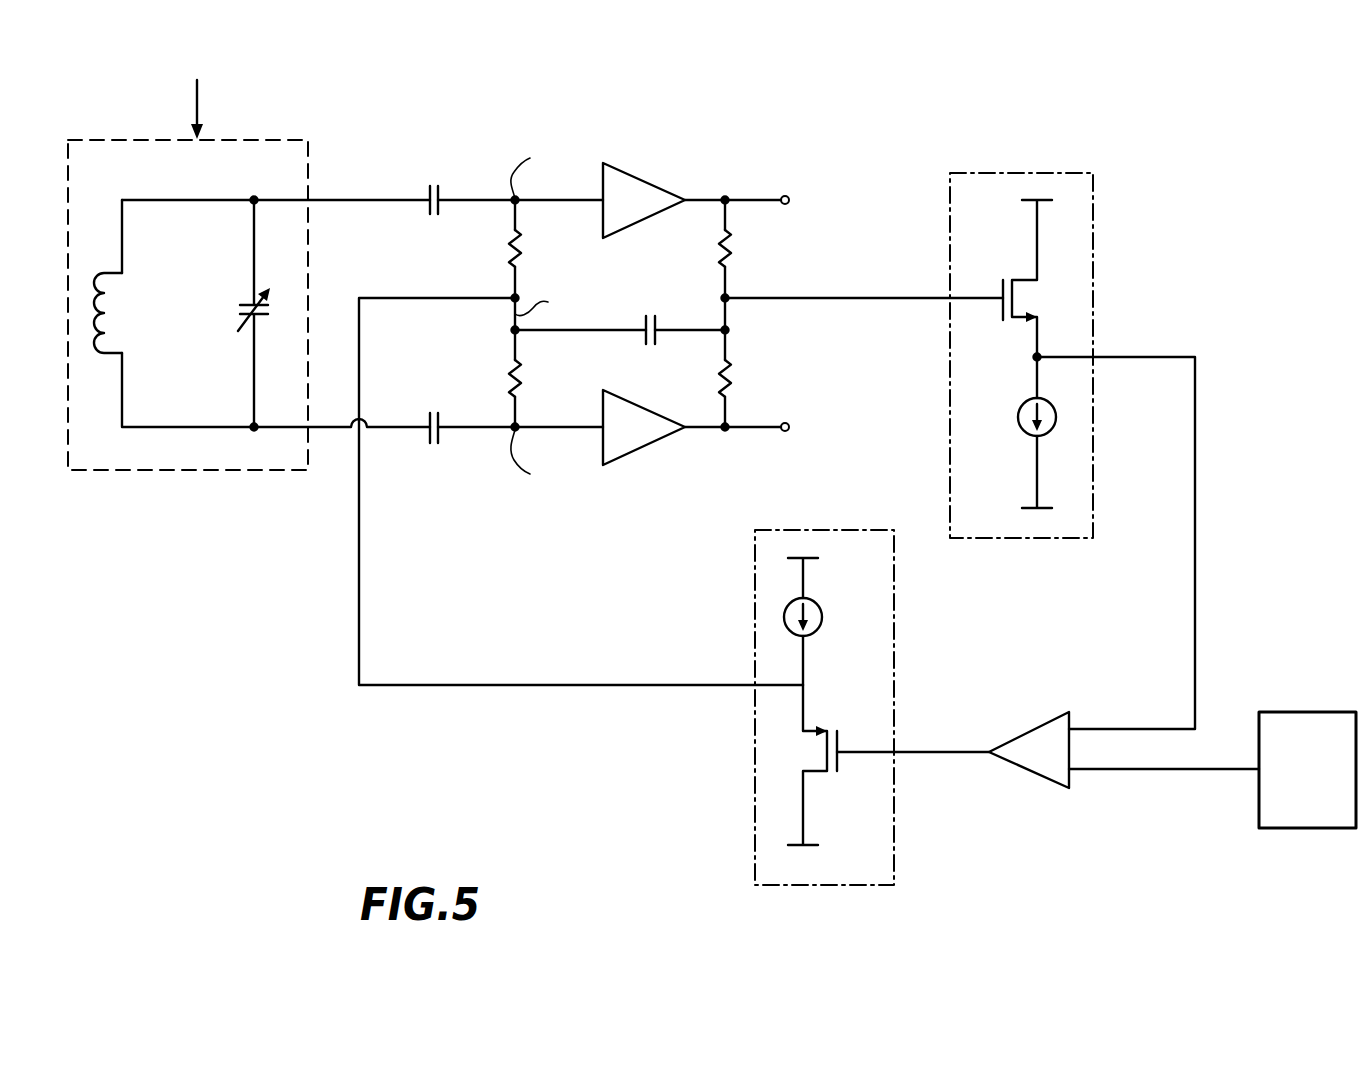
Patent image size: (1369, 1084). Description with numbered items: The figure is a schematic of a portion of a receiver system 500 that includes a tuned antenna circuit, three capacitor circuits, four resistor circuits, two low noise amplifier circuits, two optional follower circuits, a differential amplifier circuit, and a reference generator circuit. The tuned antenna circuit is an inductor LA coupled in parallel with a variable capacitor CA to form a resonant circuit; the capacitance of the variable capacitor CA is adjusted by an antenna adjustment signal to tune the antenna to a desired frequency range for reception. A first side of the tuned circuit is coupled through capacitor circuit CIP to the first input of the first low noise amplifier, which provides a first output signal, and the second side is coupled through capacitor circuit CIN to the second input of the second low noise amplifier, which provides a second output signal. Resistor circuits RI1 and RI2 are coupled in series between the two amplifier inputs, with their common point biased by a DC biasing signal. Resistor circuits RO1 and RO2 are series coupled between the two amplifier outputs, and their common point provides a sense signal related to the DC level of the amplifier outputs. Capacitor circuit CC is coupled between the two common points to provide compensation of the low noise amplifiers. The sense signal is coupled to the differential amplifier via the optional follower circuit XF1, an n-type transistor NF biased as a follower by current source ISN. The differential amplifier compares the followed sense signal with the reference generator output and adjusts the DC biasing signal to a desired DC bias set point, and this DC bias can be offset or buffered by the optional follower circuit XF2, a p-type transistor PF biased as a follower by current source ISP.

The receiver system 500 is at (232, 747).
The inductor LA is at (123, 313).
The variable capacitor CA is at (237, 313).
The capacitor circuit CIP is at (443, 182).
The capacitor circuit CIN is at (444, 447).
The resistor circuit RI1 is at (536, 249).
The resistor circuit RI2 is at (536, 379).
The resistor circuit RO1 is at (751, 249).
The resistor circuit RO2 is at (751, 379).
The capacitor circuit CC is at (662, 349).
The optional follower circuit XF1 is at (1048, 172).
The n-type transistor NF is at (1040, 278).
The current source ISN is at (1011, 432).
The optional follower circuit XF2 is at (848, 886).
The current source ISP is at (828, 621).
The p-type transistor PF is at (805, 765).